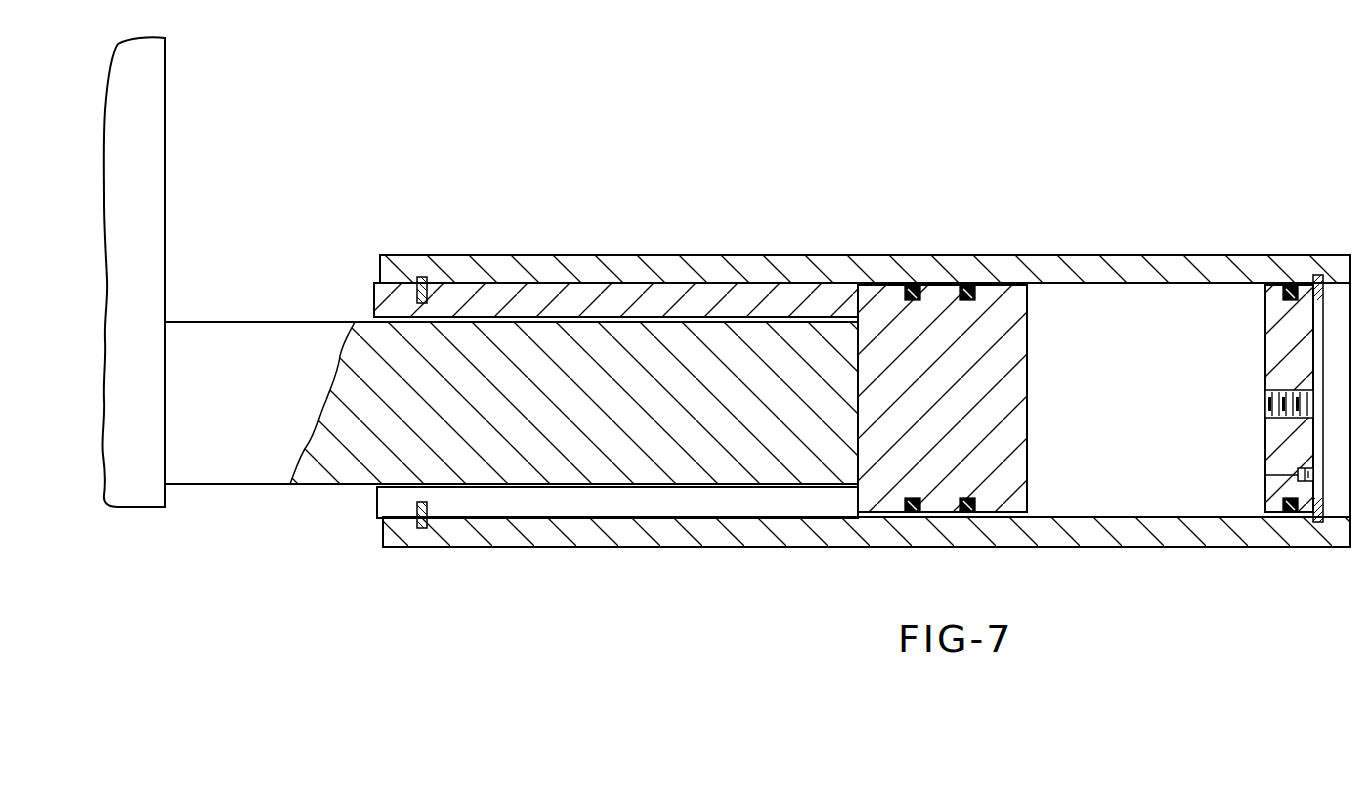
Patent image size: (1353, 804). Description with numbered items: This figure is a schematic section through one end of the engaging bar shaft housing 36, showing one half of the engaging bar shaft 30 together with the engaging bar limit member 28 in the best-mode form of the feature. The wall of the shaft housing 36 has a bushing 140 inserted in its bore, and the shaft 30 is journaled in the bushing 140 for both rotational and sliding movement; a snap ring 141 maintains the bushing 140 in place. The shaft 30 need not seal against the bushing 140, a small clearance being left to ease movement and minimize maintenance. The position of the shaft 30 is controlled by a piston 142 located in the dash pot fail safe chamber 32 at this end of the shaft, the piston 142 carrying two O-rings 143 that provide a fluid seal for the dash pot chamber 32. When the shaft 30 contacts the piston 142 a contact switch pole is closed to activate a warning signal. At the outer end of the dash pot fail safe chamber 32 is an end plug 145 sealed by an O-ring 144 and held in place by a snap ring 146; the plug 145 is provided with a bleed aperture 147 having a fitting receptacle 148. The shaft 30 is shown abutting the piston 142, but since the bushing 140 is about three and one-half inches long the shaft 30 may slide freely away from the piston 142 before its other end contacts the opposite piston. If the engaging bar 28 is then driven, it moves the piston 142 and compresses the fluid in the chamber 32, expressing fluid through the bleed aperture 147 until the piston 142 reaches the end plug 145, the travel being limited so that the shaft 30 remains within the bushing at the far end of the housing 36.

The engaging bar limit member 28 is at (166, 172).
The engaging bar shaft 30 is at (240, 322).
The dash pot fail safe chamber 32 is at (1107, 423).
The engaging bar shaft housing 36 is at (524, 255).
The bushing 140 is at (683, 291).
The snap ring 141 is at (422, 278).
The piston 142 is at (933, 297).
The O-rings 143 is at (977, 288).
The O-ring 144 is at (1290, 280).
The end plug 145 is at (1263, 335).
The snap ring 146 is at (1265, 398).
The bleed aperture 147 is at (1265, 475).
The fitting receptacle 148 is at (1298, 475).